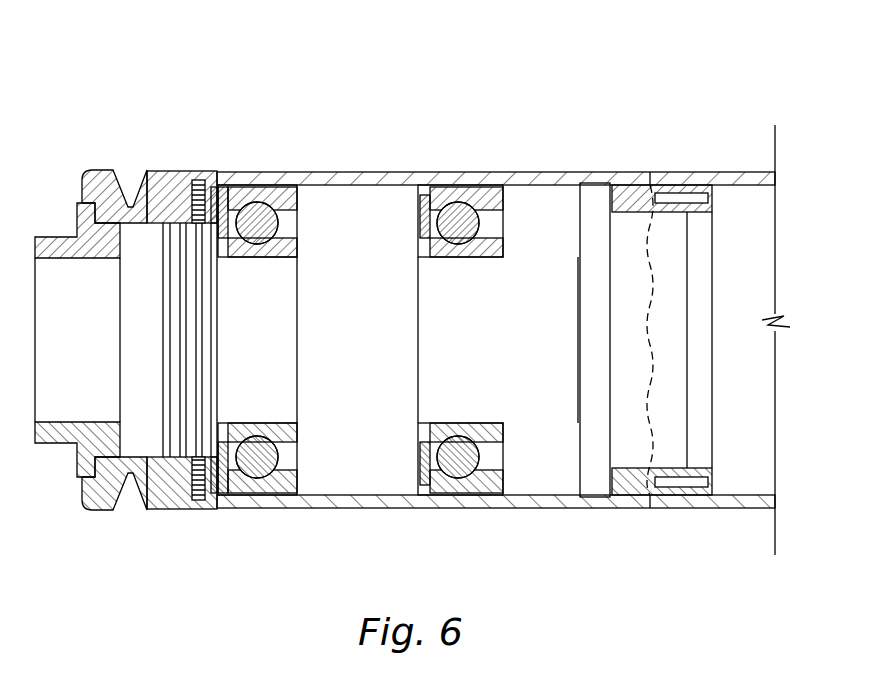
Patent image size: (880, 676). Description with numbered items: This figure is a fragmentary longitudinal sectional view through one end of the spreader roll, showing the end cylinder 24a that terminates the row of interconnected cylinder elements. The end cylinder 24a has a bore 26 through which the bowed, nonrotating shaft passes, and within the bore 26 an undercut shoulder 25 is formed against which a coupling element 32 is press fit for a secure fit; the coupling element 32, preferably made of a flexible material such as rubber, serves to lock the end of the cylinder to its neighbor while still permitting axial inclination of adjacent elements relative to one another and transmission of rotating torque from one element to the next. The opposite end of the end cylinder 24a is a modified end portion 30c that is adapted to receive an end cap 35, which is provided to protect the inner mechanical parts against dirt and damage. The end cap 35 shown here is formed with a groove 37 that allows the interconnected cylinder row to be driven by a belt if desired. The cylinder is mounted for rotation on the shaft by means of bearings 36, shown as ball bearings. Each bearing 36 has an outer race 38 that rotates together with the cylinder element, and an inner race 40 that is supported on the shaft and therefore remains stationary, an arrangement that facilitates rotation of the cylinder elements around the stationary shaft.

The end cylinder 24a is at (205, 112).
The undercut shoulder 25 is at (737, 174).
The bore 26 is at (558, 312).
The modified end portion 30c is at (178, 503).
The coupling element 32 is at (642, 490).
The end cap 35 is at (99, 503).
The bearing 36 is at (258, 216).
The groove 37 is at (127, 178).
The outer race 38 is at (233, 492).
The inner race 40 is at (297, 242).